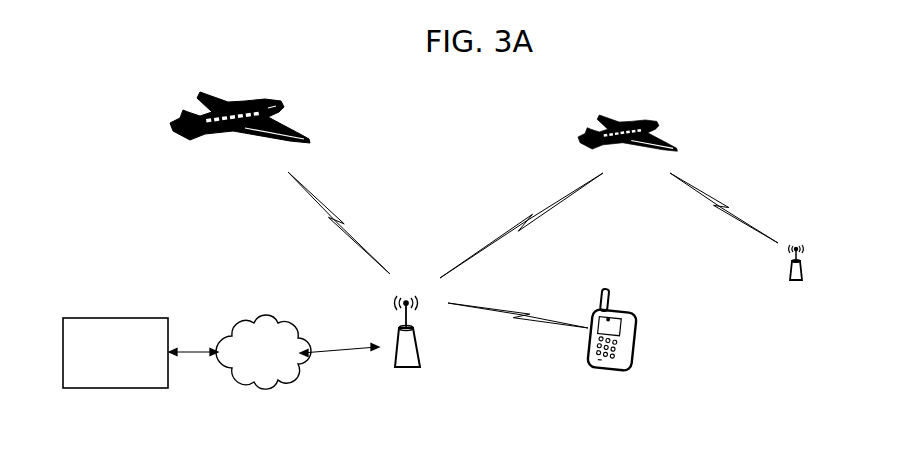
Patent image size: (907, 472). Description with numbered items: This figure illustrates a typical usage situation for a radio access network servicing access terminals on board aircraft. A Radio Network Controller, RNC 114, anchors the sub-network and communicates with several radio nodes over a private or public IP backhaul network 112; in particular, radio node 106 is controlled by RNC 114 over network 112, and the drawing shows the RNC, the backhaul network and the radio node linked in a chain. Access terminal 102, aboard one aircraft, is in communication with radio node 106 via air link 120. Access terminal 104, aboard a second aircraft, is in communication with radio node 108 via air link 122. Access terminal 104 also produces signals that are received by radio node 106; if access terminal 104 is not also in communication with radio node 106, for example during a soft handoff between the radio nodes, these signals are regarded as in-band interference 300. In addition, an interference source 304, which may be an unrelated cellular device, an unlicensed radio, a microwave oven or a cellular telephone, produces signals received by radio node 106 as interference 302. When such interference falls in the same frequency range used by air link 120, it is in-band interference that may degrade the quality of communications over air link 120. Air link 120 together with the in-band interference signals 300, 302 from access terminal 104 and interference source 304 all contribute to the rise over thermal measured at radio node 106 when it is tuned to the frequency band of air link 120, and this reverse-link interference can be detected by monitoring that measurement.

The access terminal 102 is at (240, 147).
The access terminal 104 is at (627, 152).
The radio node 106 is at (407, 361).
The radio node 108 is at (797, 293).
The IP backhaul network 112 is at (297, 352).
The radio network controller 114 is at (140, 353).
The air link 120 is at (339, 223).
The air link 122 is at (724, 214).
The in-band interference signals 300 is at (521, 226).
The in-band interference signals 302 is at (518, 332).
The interference source 304 is at (613, 356).